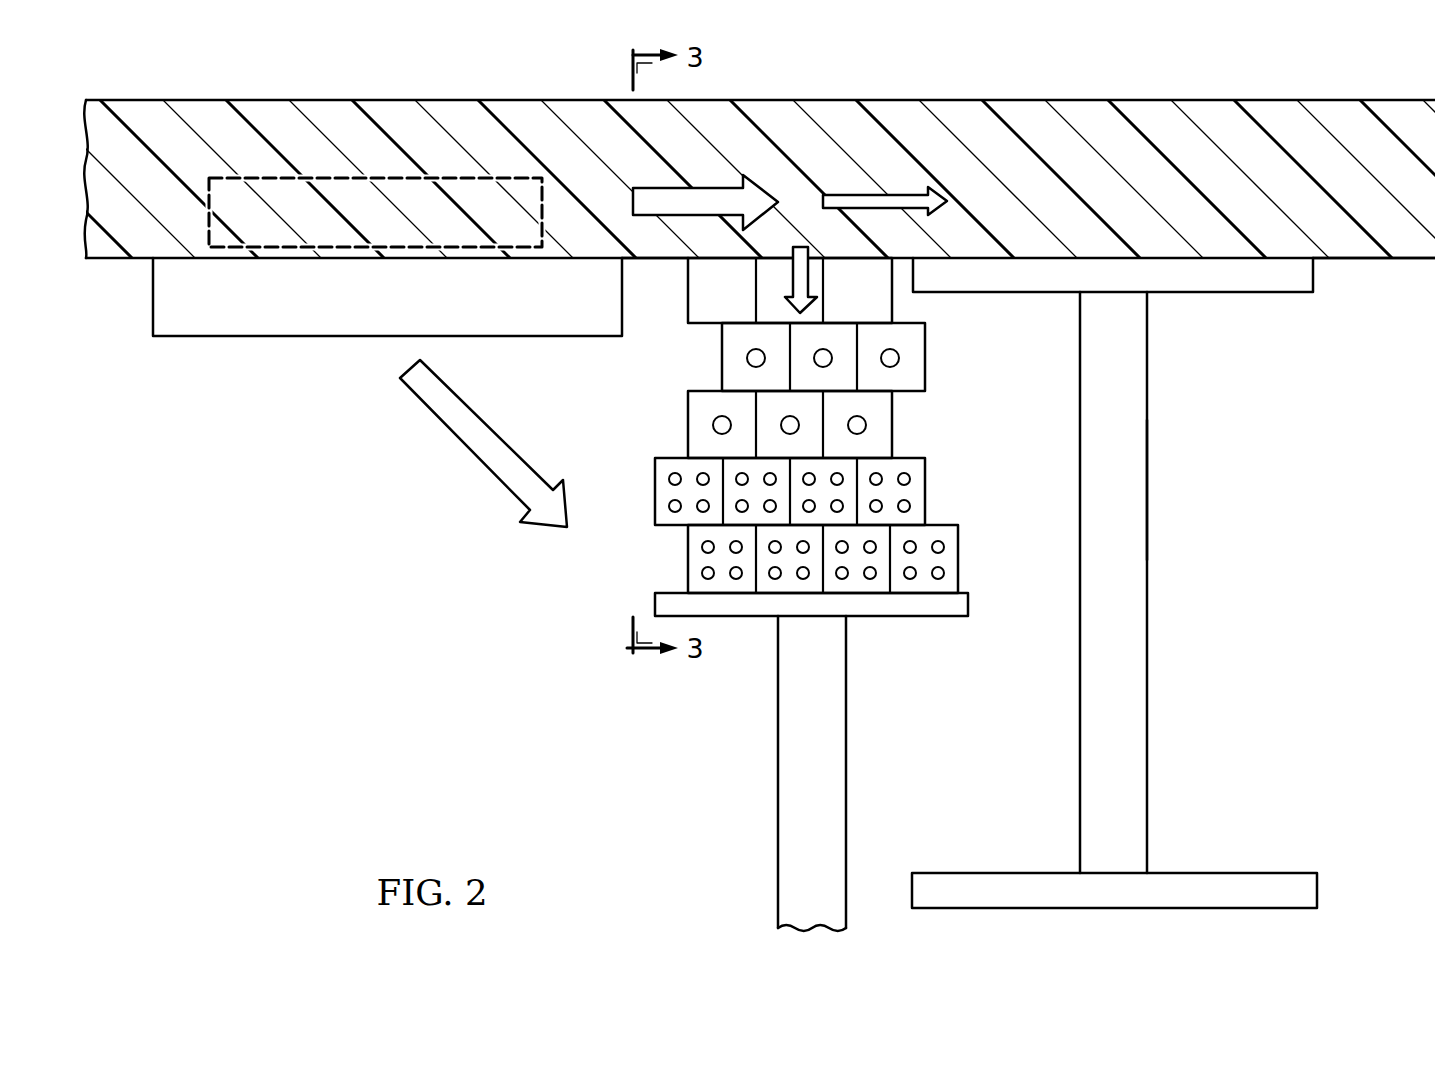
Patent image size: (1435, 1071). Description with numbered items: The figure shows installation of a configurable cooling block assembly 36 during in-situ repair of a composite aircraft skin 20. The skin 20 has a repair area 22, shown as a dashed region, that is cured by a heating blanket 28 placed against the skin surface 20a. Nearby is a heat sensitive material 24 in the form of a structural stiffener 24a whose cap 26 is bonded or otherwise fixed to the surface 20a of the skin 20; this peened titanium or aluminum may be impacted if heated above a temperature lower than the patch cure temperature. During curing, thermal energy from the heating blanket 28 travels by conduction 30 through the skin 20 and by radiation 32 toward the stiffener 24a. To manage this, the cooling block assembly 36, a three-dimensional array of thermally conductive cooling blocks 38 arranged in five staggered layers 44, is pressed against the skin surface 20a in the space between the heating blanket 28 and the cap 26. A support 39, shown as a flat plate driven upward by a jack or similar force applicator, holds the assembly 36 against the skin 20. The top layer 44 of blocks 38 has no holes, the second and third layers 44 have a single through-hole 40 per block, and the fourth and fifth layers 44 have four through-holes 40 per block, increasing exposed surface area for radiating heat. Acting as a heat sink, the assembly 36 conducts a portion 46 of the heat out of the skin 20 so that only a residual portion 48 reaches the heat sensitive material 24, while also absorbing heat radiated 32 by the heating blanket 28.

The composite aircraft skin 20 is at (1333, 102).
The surface of the skin 20a is at (1362, 268).
The repair area 22 is at (350, 248).
The heat sensitive material 24 is at (1140, 581).
The structural stiffener 24a is at (1236, 478).
The cap 26 is at (1237, 283).
The heating blanket 28 is at (263, 337).
The conduction 30 is at (677, 218).
The radiation 32 is at (465, 448).
The cooling block assembly 36 is at (787, 438).
The cooling blocks 38 is at (708, 328).
The support 39 is at (787, 774).
The through-holes 40 is at (722, 424).
The layers 44 is at (945, 344).
The portion of the heat 46 is at (793, 274).
The residual portion of the heat 48 is at (878, 213).